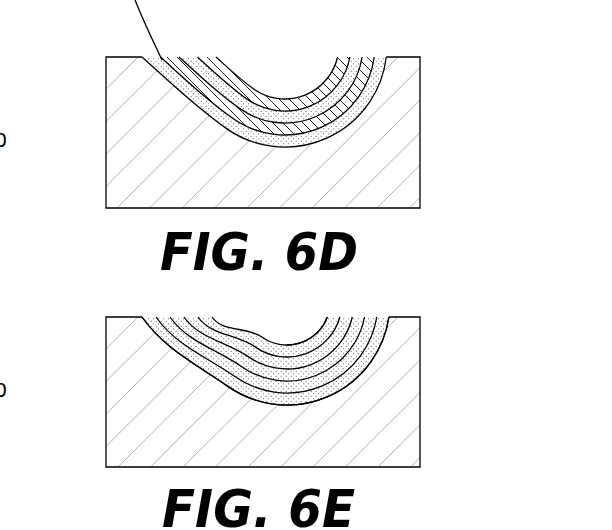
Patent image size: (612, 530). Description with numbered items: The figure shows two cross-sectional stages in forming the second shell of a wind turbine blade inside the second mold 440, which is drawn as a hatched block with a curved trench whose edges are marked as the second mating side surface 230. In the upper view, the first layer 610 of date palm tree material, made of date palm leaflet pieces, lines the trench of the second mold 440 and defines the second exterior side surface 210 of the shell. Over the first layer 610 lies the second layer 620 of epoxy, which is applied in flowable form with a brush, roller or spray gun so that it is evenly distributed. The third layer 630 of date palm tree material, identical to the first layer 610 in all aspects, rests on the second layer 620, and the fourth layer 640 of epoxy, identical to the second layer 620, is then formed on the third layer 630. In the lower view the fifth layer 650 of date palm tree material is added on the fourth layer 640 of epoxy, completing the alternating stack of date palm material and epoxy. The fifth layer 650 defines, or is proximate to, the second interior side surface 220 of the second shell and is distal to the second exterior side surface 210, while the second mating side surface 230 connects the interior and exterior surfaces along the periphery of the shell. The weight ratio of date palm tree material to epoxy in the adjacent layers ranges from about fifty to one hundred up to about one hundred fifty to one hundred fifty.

In FIG. 6E, the second exterior side surface 210 is at (317, 402).
In FIG. 6E, the second interior side surface 220 is at (283, 347).
In FIG. 6D, the second mating side surface 230 is at (238, 75).
In FIG. 6E, the second mating side surface 230 is at (266, 340).
In FIG. 6D, the second mold 440 is at (106, 113).
In FIG. 6E, the second mold 440 is at (106, 392).
In FIG. 6D, the first layer 610 is at (148, 60).
In FIG. 6E, the first layer 610 is at (362, 367).
In FIG. 6E, the second layer 620 is at (363, 347).
In FIG. 6D, the third layer 630 is at (332, 102).
In FIG. 6E, the third layer 630 is at (188, 332).
In FIG. 6D, the fourth layer 640 is at (213, 80).
In FIG. 6E, the fourth layer 640 is at (228, 348).
In FIG. 6E, the fifth layer 650 is at (333, 318).